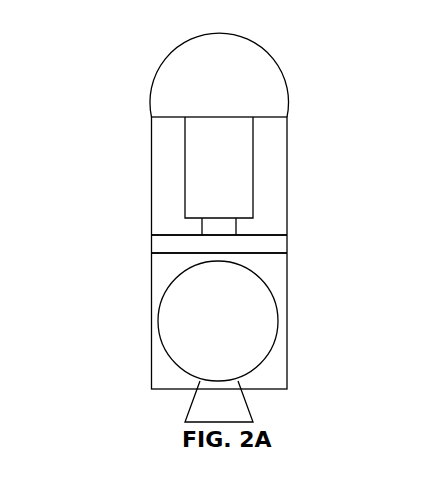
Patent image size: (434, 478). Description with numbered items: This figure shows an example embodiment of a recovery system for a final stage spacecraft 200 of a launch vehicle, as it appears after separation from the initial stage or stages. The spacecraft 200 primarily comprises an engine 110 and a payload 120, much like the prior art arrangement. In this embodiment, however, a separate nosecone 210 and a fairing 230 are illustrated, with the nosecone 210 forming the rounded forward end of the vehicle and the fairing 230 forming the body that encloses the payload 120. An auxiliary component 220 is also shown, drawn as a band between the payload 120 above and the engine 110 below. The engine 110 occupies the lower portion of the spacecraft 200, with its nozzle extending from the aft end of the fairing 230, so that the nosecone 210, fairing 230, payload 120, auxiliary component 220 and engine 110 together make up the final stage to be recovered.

The final stage spacecraft 200 is at (199, 217).
The nosecone 210 is at (235, 67).
The fairing 230 is at (287, 137).
The payload 120 is at (253, 179).
The auxiliary component 220 is at (287, 243).
The engine 110 is at (278, 318).